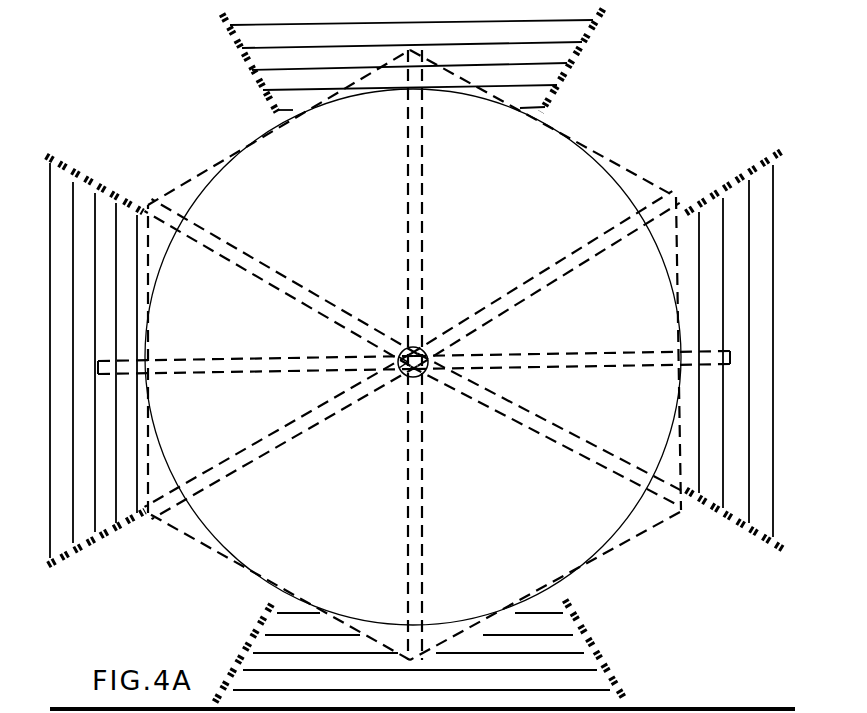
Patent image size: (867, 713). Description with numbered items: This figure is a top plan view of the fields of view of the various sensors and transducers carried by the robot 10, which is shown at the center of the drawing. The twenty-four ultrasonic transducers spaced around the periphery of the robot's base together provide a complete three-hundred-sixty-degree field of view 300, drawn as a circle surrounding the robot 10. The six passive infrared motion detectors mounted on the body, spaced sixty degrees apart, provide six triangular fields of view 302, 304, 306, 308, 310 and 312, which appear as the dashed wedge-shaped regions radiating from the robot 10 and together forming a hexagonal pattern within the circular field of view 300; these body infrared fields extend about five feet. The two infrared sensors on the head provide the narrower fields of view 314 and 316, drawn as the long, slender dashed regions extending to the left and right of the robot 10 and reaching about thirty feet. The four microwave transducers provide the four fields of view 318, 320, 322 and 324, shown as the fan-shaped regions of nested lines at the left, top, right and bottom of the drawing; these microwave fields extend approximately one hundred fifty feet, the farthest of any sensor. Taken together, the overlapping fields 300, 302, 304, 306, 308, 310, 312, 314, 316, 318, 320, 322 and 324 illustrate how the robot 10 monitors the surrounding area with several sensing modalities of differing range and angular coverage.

The robot 10 is at (437, 312).
The field of view 300 is at (414, 349).
The triangular field of view 302 is at (564, 123).
The triangular field of view 304 is at (647, 353).
The triangular field of view 306 is at (545, 586).
The triangular field of view 308 is at (279, 586).
The triangular field of view 310 is at (180, 359).
The triangular field of view 312 is at (271, 129).
The field of view 314 is at (256, 352).
The field of view 316 is at (572, 344).
The field of view 318 is at (95, 339).
The field of view 320 is at (440, 60).
The field of view 322 is at (733, 359).
The field of view 324 is at (456, 651).